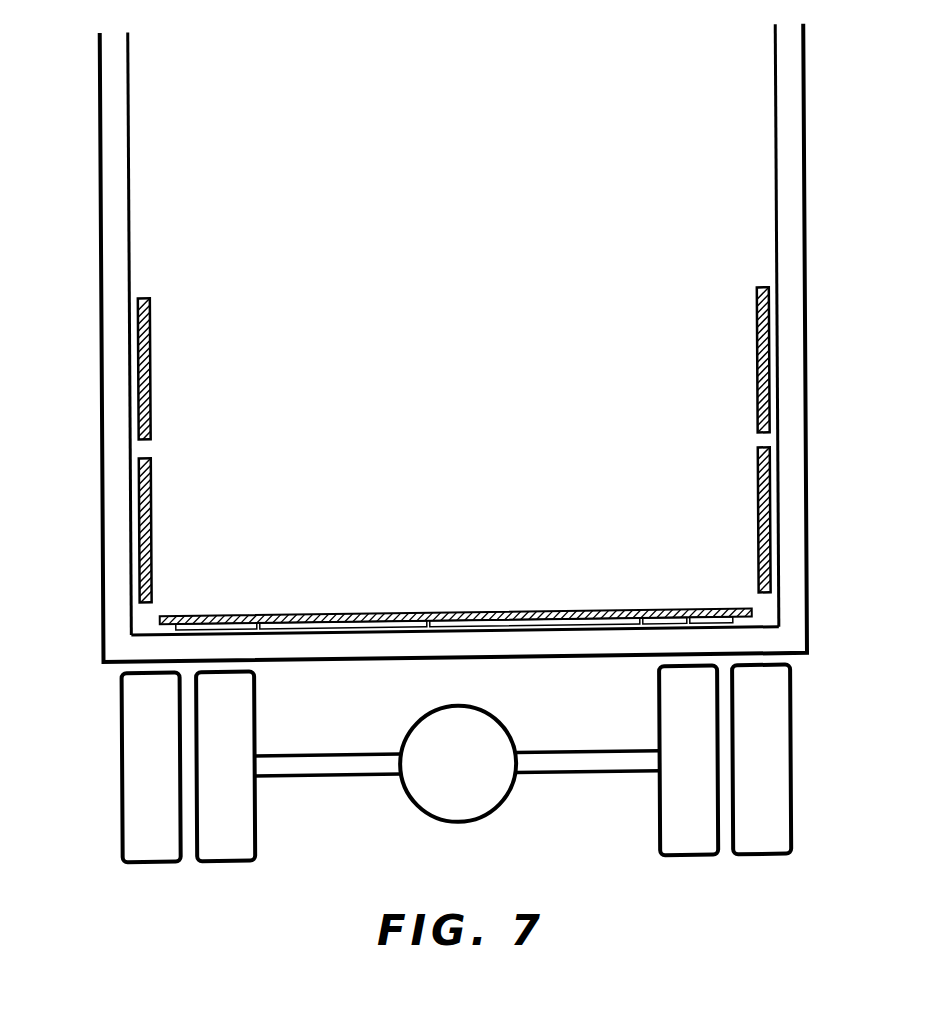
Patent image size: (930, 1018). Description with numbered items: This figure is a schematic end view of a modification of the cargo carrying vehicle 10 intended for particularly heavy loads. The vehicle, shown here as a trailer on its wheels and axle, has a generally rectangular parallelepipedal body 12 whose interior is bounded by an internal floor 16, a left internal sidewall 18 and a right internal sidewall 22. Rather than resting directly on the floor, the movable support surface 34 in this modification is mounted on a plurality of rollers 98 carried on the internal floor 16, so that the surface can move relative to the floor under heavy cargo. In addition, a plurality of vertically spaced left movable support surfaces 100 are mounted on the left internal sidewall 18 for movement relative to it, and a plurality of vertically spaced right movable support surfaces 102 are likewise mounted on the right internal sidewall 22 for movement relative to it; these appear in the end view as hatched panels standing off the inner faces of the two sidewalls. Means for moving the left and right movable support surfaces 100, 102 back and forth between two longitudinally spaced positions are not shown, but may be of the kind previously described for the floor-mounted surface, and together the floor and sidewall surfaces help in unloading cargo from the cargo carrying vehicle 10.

The cargo carrying vehicle 10 is at (92, 297).
The body 12 is at (803, 236).
The internal floor 16 is at (436, 614).
The left internal sidewall 18 is at (128, 218).
The right internal sidewall 22 is at (776, 191).
The movable support surface 34 is at (558, 610).
The rollers 98 is at (243, 628).
The left movable support surfaces 100 is at (150, 494).
The right movable support surfaces 102 is at (757, 460).